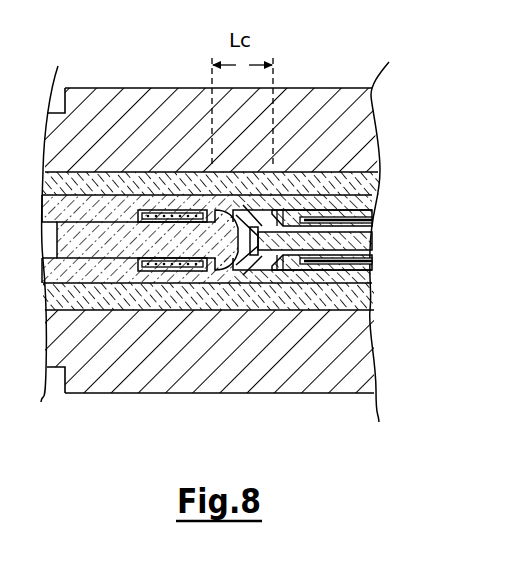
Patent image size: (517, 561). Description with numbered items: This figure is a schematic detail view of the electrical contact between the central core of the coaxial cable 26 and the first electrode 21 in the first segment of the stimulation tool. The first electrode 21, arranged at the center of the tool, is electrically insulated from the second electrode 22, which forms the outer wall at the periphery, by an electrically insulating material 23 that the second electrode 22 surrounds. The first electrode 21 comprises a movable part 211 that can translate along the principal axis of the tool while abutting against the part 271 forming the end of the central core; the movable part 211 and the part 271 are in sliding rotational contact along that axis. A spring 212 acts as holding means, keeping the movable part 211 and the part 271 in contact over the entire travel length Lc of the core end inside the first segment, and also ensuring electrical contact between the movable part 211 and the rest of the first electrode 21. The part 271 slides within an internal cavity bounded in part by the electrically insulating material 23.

The first electrode 21 is at (112, 205).
The second electrode 22 is at (168, 122).
The electrically insulating material 23 is at (345, 180).
The coaxial cable 26 is at (315, 217).
The movable part 211 is at (233, 270).
The spring 212 is at (167, 273).
The part forming the end of the central core 271 is at (258, 268).